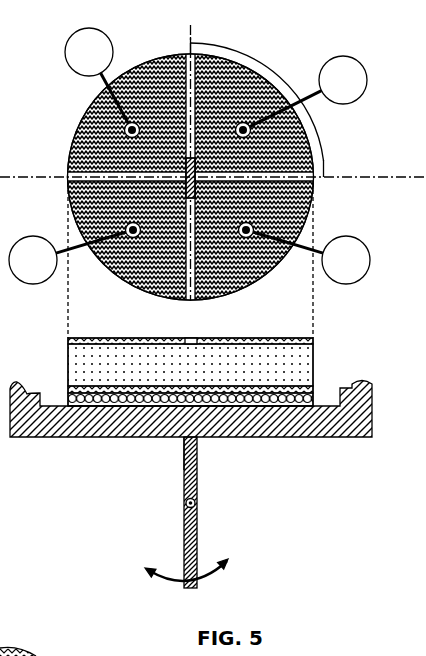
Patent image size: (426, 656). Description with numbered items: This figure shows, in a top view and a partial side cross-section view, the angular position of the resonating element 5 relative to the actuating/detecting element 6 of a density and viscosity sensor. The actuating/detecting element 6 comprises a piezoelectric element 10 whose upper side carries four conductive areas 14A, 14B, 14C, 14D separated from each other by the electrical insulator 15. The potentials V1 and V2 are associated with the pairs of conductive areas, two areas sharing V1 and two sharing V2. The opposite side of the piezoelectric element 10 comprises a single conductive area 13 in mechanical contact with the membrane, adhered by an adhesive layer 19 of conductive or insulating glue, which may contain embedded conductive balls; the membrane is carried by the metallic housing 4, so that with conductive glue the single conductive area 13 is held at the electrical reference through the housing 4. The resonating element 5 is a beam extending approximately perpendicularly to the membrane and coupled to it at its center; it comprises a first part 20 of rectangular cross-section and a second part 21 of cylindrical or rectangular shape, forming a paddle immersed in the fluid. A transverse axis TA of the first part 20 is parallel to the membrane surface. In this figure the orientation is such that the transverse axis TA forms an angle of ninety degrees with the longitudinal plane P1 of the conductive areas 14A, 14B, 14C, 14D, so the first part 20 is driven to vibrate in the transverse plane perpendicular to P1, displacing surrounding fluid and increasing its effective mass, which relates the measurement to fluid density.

The conductive area 14A is at (172, 92).
The conductive area 14B is at (172, 272).
The conductive area 14C is at (247, 272).
The conductive area 14D is at (247, 92).
The electrical insulator 15 is at (68, 181).
The first part of the beam 20 is at (184, 561).
The longitudinal plane P1 is at (360, 177).
The electrical potential V1 is at (75, 156).
The electrical potential V2 is at (303, 170).
The actuating/detecting element 6 is at (238, 411).
The piezoelectric element 10 is at (198, 372).
The single conductive area 13 is at (313, 388).
The adhesive layer 19 is at (313, 398).
The metallic housing 4 is at (20, 437).
The resonating element 5 is at (199, 458).
The second part of the beam 21 is at (184, 457).
The transverse axis TA is at (196, 504).